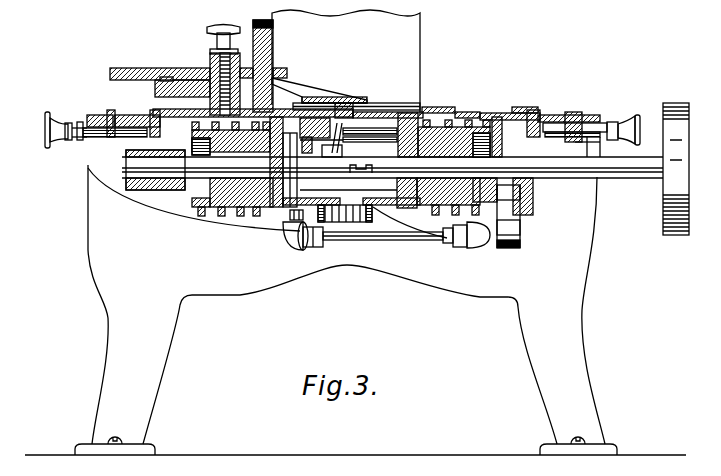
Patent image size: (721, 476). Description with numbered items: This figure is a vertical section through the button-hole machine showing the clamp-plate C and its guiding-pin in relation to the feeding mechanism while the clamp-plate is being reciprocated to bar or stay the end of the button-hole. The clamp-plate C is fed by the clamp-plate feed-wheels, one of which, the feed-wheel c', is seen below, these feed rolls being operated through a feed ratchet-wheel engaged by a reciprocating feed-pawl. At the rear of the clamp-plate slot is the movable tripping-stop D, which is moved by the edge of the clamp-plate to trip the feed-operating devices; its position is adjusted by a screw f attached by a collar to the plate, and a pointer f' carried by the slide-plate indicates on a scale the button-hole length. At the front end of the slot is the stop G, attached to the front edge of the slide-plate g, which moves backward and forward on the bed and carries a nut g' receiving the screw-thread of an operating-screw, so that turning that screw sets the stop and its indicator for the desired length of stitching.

The tripping-stop D is at (170, 69).
The clamp-plate C is at (285, 100).
The screw f is at (66, 140).
The pointer f' is at (121, 116).
The clamp-plate feed-wheel c' is at (386, 236).
The stop G is at (532, 108).
The slide-plate g is at (591, 122).
The nut g' is at (580, 172).